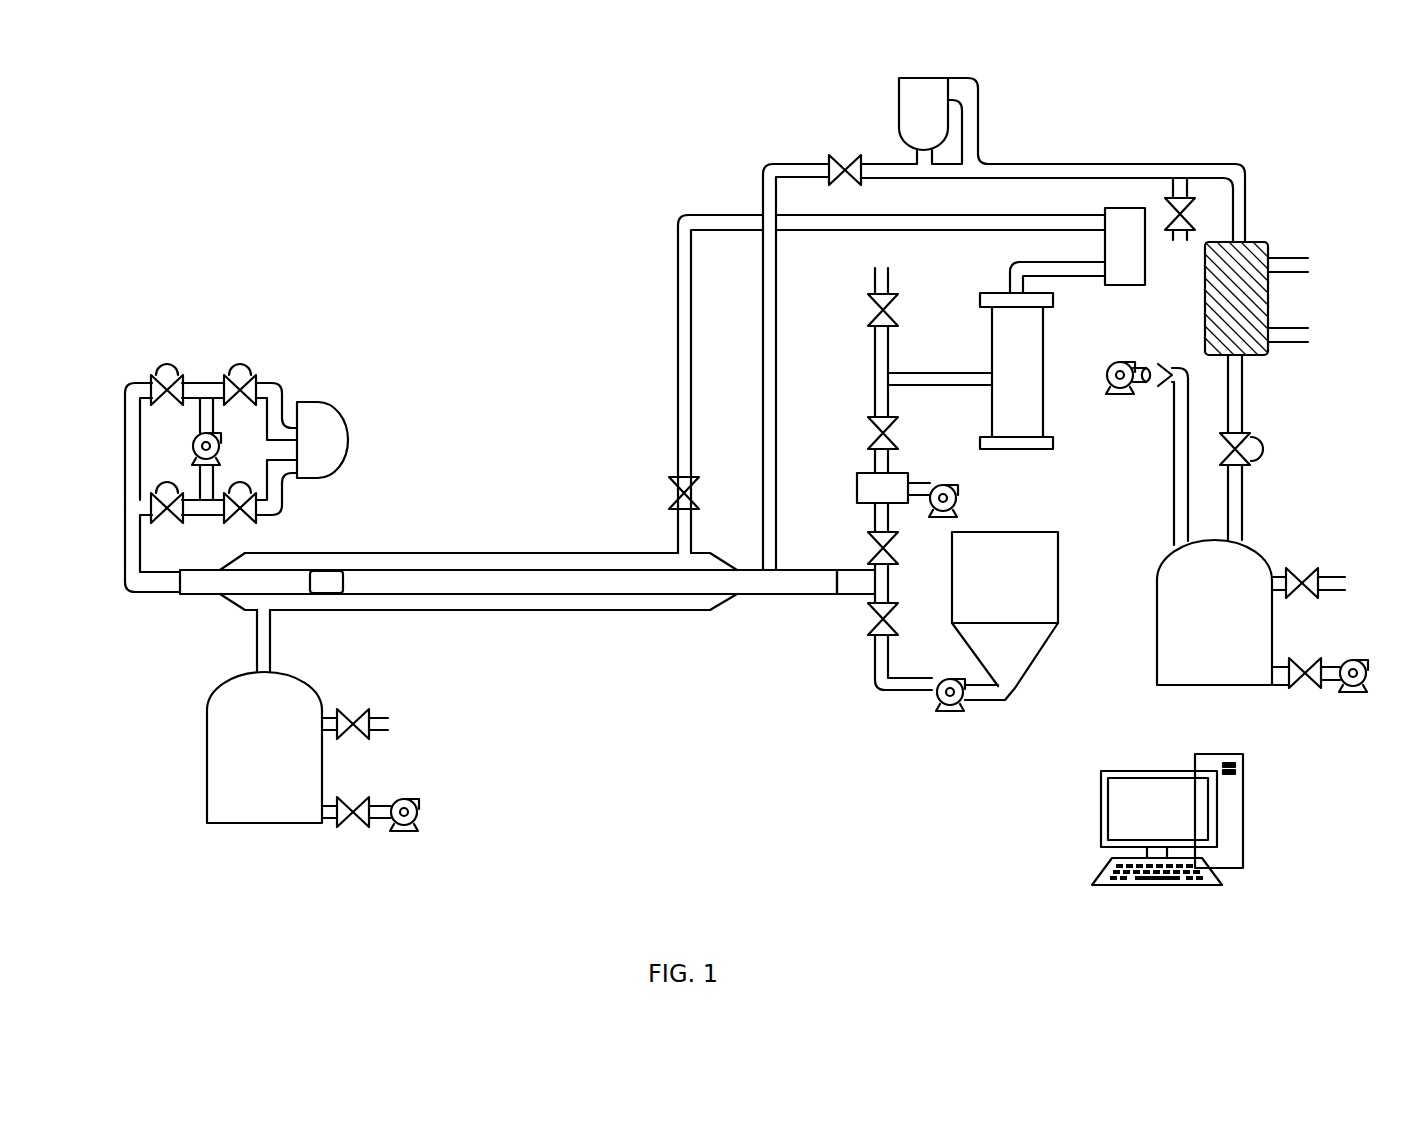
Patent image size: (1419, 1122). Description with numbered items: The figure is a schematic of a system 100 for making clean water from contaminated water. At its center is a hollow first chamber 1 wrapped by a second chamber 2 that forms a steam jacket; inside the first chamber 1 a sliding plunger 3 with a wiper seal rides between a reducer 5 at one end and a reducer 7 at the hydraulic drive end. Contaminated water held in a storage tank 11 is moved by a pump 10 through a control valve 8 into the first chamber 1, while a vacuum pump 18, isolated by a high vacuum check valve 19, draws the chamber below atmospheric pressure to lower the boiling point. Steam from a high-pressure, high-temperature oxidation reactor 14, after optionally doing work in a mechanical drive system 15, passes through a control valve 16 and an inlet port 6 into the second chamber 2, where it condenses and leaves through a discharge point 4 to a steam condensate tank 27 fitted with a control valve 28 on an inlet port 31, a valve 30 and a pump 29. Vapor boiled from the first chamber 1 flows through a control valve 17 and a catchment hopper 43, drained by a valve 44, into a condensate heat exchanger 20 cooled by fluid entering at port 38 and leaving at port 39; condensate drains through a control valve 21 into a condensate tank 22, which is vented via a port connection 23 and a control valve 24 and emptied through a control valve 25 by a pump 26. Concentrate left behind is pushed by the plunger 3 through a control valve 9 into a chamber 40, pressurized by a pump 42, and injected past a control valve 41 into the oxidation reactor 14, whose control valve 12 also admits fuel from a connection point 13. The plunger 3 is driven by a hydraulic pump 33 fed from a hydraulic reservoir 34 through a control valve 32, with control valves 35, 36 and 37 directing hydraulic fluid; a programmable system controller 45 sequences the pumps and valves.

The system 100 is at (345, 163).
The first chamber 1 is at (543, 592).
The second chamber 2 is at (455, 610).
The sliding plunger 3 is at (318, 596).
The discharge point 4 is at (257, 644).
The reducer 5 is at (836, 600).
The inlet port 6 is at (678, 540).
The reducer 7 is at (180, 596).
The control valve 8 is at (867, 619).
The control valve 9 is at (867, 548).
The pump 10 is at (948, 713).
The storage tank 11 is at (1032, 655).
The control valve 12 is at (867, 310).
The connection point 13 is at (882, 268).
The oxidation reactor 14 is at (1044, 405).
The mechanical drive system 15 is at (1120, 285).
The control valve 16 is at (669, 493).
The control valve 17 is at (851, 186).
The vacuum pump 18 is at (1108, 362).
The high vacuum check valve 19 is at (1150, 366).
The condensate heat exchanger 20 is at (1204, 310).
The control valve 21 is at (1265, 450).
The condensate tank 22 is at (1157, 638).
The port connection 23 is at (1346, 585).
The control valve 24 is at (1306, 600).
The control valve 25 is at (1305, 659).
The pump 26 is at (1370, 665).
The steam condensate tank 27 is at (212, 708).
The control valve 28 is at (358, 708).
The pump 29 is at (421, 803).
The valve 30 is at (352, 830).
The inlet port 31 is at (390, 723).
The control valve 32 is at (237, 525).
The hydraulic pump 33 is at (193, 456).
The hydraulic reservoir 34 is at (330, 479).
The control valve 35 is at (155, 375).
The control valve 36 is at (228, 375).
The control valve 37 is at (170, 525).
The port 38 is at (1310, 263).
The port 39 is at (1310, 333).
The chamber 40 is at (857, 485).
The control valve 41 is at (867, 433).
The pump 42 is at (958, 487).
The catchment hopper 43 is at (899, 104).
The valve 44 is at (1192, 214).
The programmable system controller 45 is at (1243, 828).